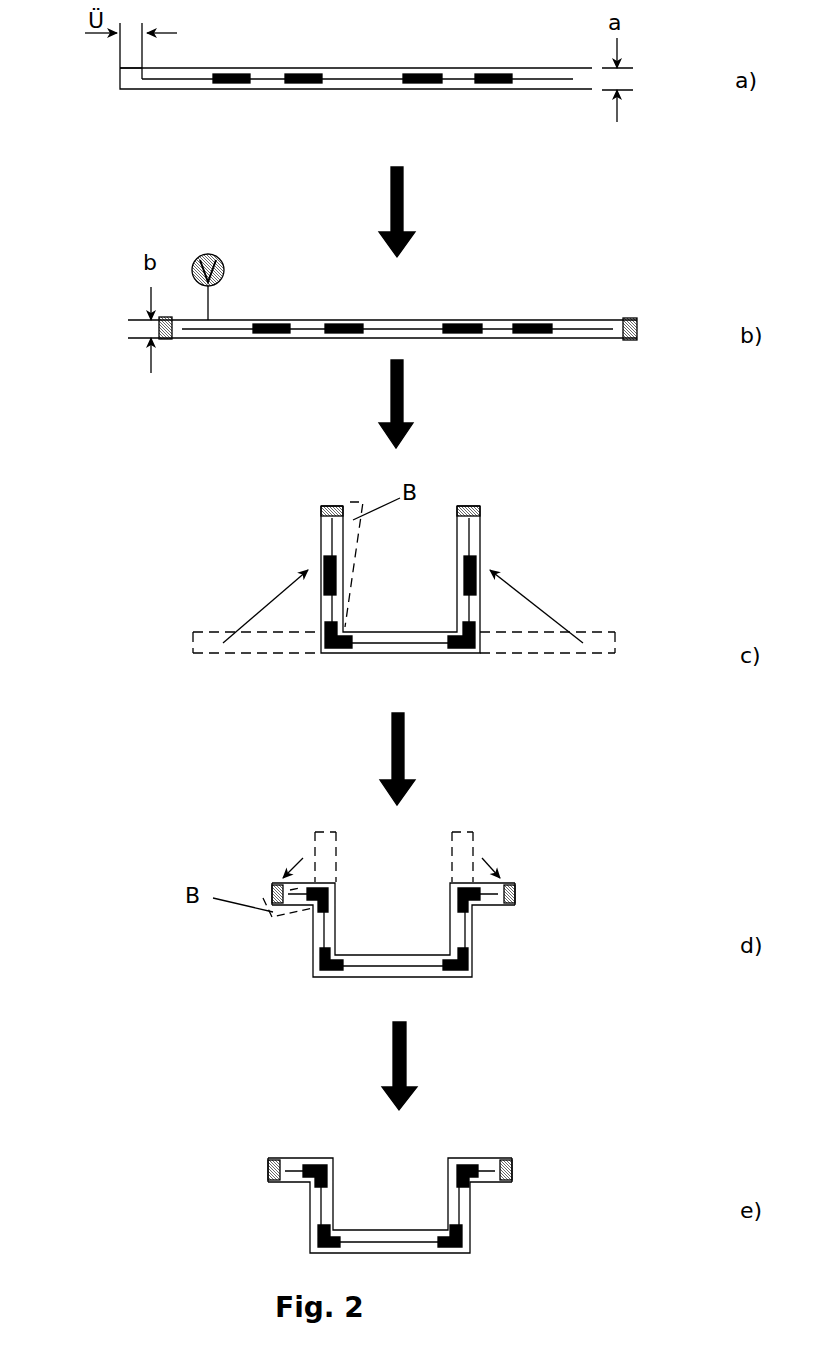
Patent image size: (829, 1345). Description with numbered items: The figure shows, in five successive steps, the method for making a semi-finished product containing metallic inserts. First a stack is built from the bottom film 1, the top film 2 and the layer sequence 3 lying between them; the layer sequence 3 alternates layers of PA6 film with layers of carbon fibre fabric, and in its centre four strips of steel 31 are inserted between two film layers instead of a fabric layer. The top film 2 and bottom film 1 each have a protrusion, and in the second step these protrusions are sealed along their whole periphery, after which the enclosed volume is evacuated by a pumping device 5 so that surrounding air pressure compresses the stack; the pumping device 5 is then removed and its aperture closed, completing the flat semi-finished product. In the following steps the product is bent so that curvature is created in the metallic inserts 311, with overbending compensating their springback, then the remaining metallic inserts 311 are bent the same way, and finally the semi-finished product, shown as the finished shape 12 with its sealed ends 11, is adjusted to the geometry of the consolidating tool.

The bottom film 1 is at (160, 93).
The top film 2 is at (135, 69).
The layer sequence 3 is at (363, 80).
The strips of steel 31 is at (302, 83).
The metallic inserts 311 is at (328, 652).
The pumping device 5 is at (223, 262).
The end connectors of strip 11 is at (173, 340).
The finished U-shaped component 12 is at (292, 1210).